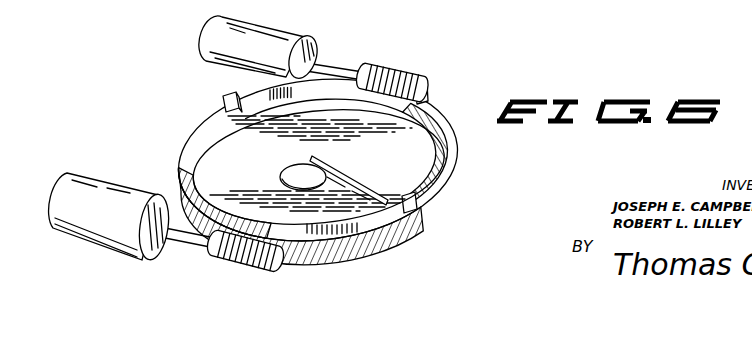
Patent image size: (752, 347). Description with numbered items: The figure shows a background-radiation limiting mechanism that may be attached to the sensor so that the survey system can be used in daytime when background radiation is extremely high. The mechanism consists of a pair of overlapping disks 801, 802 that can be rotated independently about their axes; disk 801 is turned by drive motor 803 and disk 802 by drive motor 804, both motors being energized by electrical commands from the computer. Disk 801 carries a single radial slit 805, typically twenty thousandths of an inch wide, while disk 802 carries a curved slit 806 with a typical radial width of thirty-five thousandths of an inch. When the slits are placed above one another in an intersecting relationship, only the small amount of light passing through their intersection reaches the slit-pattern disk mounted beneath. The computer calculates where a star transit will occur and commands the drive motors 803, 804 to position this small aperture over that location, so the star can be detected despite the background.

The disk 801 is at (457, 148).
The disk 802 is at (355, 258).
The drive motor 803 is at (294, 34).
The drive motor 804 is at (107, 253).
The radial slit 805 is at (362, 182).
The curved slit 806 is at (280, 178).